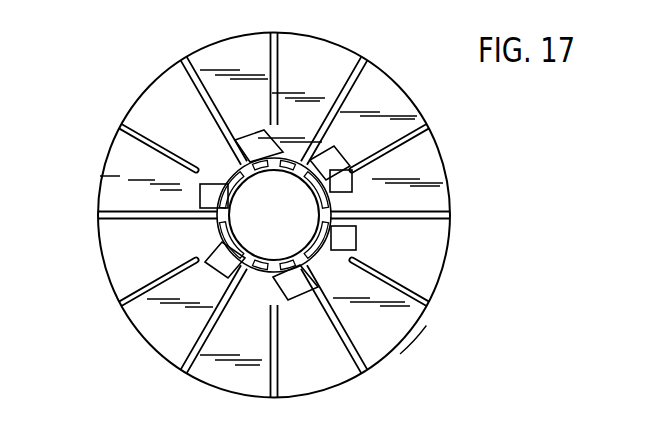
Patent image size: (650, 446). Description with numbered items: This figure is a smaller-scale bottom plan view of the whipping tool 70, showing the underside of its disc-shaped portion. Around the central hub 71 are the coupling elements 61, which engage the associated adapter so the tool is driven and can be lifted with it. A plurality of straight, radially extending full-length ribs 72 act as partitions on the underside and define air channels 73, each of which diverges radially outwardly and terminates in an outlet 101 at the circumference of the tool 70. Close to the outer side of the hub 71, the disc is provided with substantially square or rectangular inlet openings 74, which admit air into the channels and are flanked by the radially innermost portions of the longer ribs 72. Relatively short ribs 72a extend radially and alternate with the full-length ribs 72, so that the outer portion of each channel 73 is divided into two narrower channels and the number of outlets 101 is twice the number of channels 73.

The whipping tool 70 is at (336, 390).
The outlet 101 is at (413, 332).
The air channel 73 is at (116, 232).
The rib 72 is at (195, 88).
The short rib 72a is at (404, 146).
The inlet opening 74 is at (323, 162).
The hub 71 is at (305, 253).
The coupling element 61 is at (273, 280).